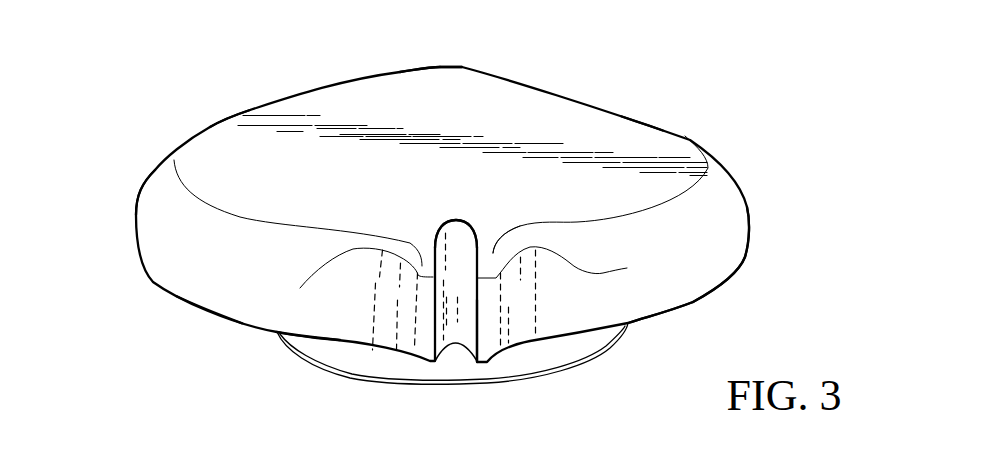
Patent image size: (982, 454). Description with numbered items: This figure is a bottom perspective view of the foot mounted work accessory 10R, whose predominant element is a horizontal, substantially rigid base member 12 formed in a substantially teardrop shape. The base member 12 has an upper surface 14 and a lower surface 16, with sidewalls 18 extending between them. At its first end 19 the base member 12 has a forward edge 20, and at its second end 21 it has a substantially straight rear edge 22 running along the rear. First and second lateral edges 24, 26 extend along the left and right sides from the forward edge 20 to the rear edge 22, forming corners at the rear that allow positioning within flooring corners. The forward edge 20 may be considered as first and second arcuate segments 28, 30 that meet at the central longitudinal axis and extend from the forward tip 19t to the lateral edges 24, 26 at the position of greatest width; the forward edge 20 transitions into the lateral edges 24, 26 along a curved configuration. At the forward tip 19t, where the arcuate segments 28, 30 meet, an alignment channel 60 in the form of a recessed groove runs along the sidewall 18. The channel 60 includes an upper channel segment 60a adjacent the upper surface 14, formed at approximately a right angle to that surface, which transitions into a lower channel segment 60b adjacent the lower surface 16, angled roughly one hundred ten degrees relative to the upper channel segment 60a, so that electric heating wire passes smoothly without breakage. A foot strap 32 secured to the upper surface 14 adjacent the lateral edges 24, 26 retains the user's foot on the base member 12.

The foot mounted work accessory 10R is at (714, 124).
The base member 12 is at (733, 242).
The upper surface 14 is at (202, 311).
The lower surface 16 is at (461, 119).
The sidewalls 18 is at (150, 212).
The first end 19 is at (385, 332).
The forward tip 19t is at (497, 298).
The forward edge 20 is at (315, 323).
The second end 21 is at (459, 67).
The rear edge 22 is at (444, 67).
The first lateral edge 24 is at (647, 117).
The second lateral edge 26 is at (263, 103).
The first arcuate segment 28 is at (677, 255).
The second arcuate segment 30 is at (233, 253).
The foot strap 32 is at (615, 350).
The alignment channel 60 is at (452, 356).
The upper channel segment 60a is at (463, 322).
The lower channel segment 60b is at (458, 235).